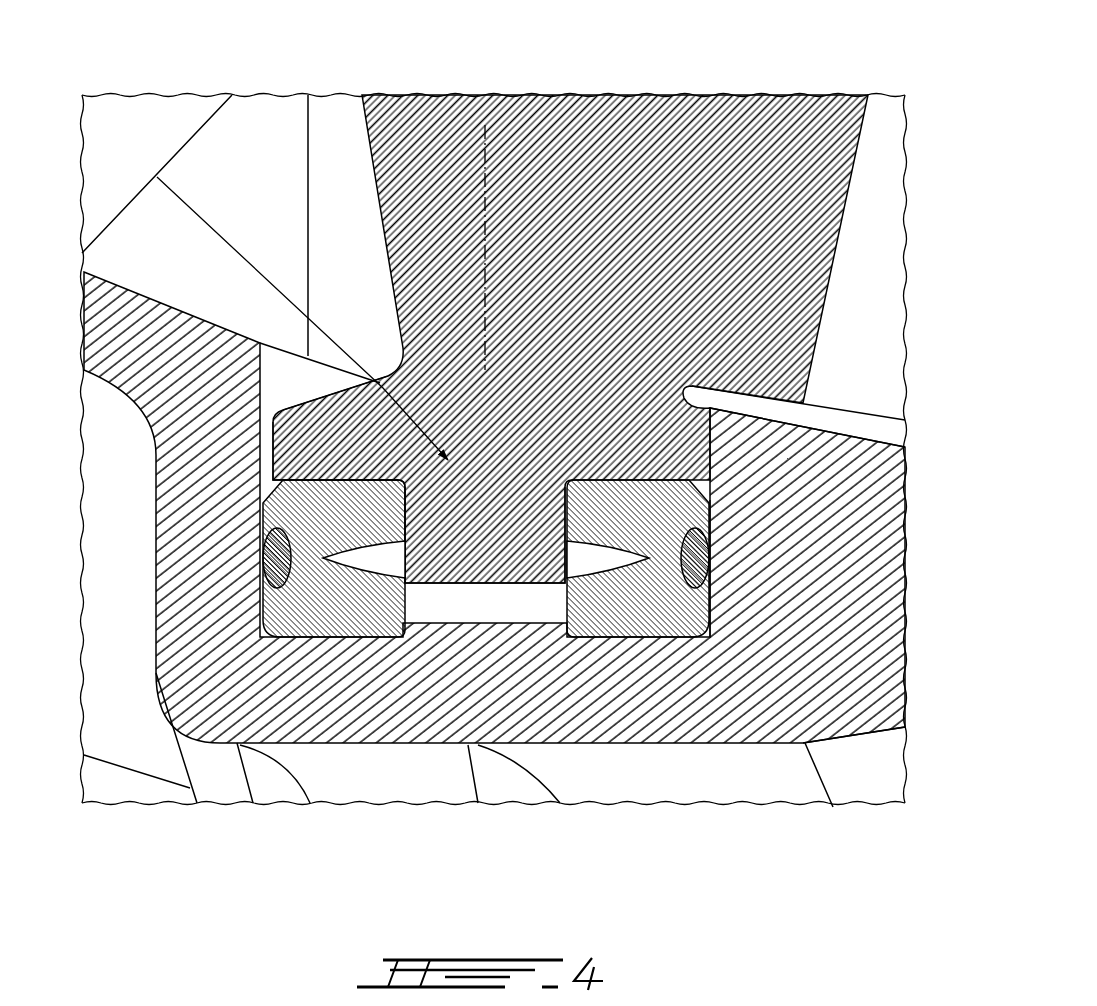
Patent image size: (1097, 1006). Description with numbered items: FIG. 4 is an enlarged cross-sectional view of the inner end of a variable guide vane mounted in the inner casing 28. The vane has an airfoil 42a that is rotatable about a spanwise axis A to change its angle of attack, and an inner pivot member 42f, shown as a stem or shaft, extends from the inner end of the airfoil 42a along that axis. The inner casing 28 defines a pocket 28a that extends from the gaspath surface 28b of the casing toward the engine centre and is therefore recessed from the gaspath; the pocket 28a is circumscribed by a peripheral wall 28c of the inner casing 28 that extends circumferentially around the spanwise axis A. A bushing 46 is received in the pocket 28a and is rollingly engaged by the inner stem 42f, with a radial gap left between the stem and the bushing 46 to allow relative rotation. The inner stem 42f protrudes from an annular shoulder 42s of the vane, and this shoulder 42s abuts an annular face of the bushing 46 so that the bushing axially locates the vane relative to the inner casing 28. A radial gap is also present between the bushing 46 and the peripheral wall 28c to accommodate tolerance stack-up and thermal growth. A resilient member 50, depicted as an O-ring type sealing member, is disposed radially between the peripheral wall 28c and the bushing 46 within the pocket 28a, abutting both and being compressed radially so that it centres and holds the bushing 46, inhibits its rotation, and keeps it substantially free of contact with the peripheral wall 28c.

The inner casing 28 is at (753, 497).
The pockets 28a is at (177, 308).
The gaspath surface 28b is at (847, 432).
The peripheral walls 28c is at (712, 562).
The airfoil 42a is at (637, 207).
The inner pivot member 42f is at (287, 383).
The shoulders 42s is at (616, 500).
The bushings 46 is at (328, 613).
The resilient members 50 is at (262, 550).
The spanwise axes A is at (493, 197).